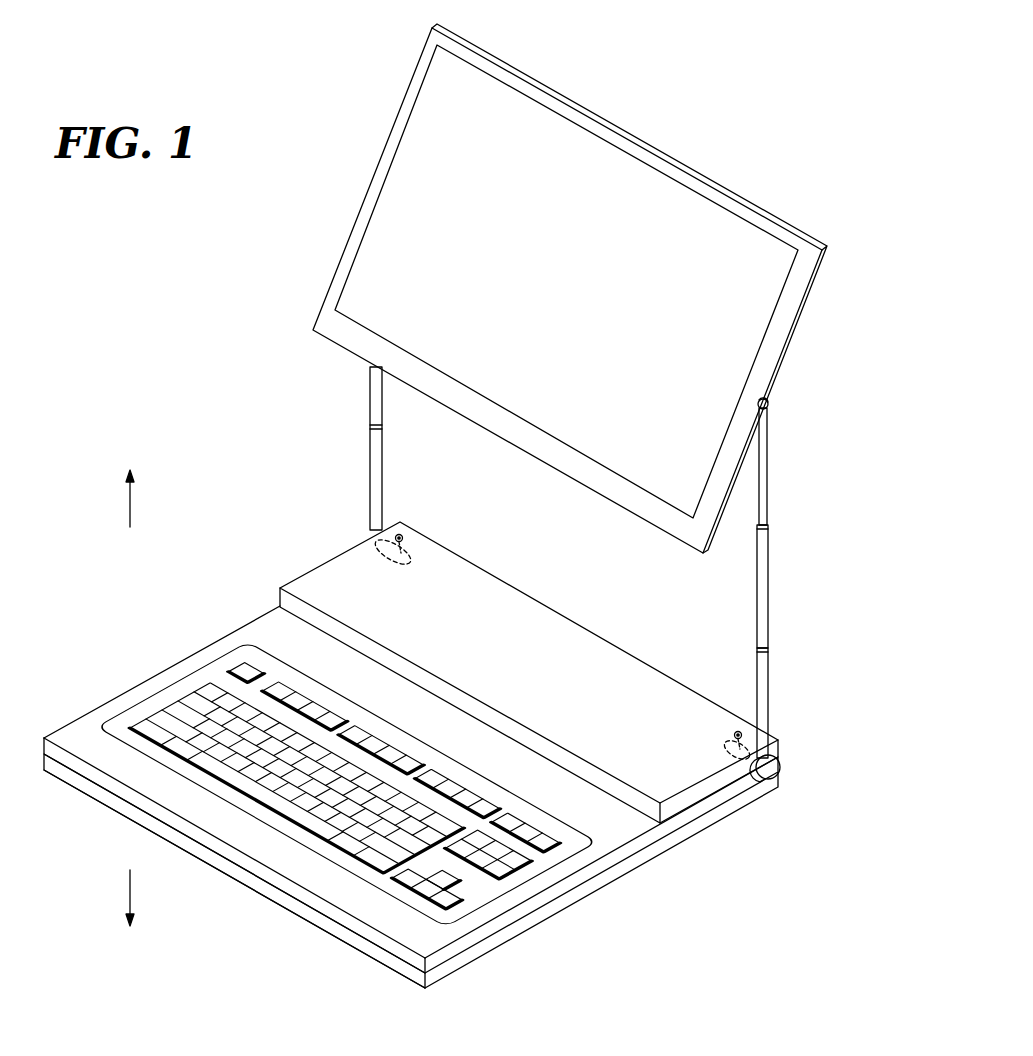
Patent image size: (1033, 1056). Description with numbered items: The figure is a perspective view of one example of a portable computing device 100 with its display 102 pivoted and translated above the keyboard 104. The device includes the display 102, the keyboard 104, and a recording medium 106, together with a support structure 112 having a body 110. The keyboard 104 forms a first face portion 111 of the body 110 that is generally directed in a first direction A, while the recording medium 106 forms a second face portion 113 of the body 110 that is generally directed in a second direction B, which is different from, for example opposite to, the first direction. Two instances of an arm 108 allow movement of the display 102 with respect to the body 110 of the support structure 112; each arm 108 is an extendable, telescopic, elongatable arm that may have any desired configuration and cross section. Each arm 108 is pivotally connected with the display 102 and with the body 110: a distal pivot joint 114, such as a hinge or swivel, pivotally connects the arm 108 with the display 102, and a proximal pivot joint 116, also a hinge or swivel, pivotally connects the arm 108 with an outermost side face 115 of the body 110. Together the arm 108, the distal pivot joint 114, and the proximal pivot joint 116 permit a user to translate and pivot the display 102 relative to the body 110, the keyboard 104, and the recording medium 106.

The portable computing device 100 is at (712, 99).
The display 102 is at (423, 116).
The keyboard 104 is at (331, 743).
The recording medium 106 is at (431, 813).
The arm 108 is at (378, 401).
The body 110 is at (577, 691).
The first face portion 111 is at (250, 652).
The support structure 112 is at (705, 842).
The second face portion 113 is at (490, 950).
The distal pivot joint 114 is at (768, 404).
The outermost side face 115 is at (745, 782).
The proximal pivot joint 116 is at (378, 530).